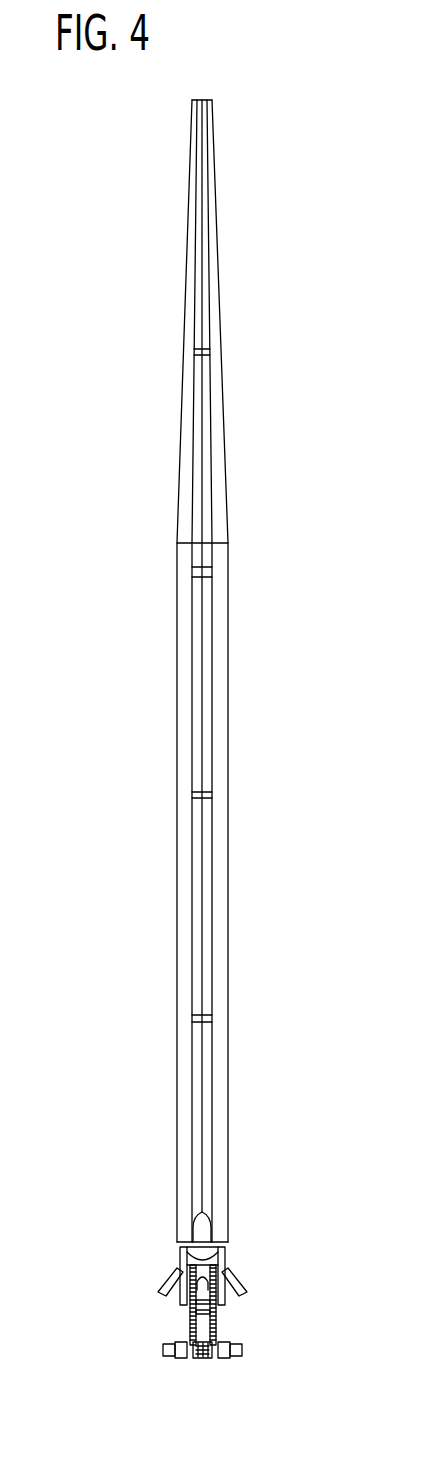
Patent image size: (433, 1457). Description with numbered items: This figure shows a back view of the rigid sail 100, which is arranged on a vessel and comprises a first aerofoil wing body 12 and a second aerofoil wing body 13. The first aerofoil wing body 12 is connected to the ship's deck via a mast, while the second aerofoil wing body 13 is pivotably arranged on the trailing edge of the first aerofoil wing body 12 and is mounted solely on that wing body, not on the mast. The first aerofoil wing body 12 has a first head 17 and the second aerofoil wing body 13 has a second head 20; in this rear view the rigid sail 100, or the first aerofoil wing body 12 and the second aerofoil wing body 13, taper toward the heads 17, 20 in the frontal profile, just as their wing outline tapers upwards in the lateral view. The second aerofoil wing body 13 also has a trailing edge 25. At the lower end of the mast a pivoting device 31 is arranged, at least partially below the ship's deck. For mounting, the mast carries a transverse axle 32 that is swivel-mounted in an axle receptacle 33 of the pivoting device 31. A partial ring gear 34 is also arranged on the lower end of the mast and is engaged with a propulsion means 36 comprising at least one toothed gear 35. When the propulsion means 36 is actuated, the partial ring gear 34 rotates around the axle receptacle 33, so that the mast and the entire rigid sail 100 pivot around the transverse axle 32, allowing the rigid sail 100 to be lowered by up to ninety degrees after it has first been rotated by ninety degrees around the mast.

The rigid sail 100 is at (97, 179).
The first aerofoil wing body 12 is at (224, 427).
The second aerofoil wing body 13 is at (181, 427).
The first head 17 is at (211, 100).
The second head 20 is at (193, 100).
The trailing edge 25 is at (203, 652).
The pivoting device 31 is at (186, 1319).
The transverse axle 32 is at (182, 1255).
The axle receptacle 33 is at (162, 1284).
The partial ring gear 34 is at (218, 1319).
The toothed gear 35 is at (228, 1358).
The propulsion means 36 is at (179, 1358).